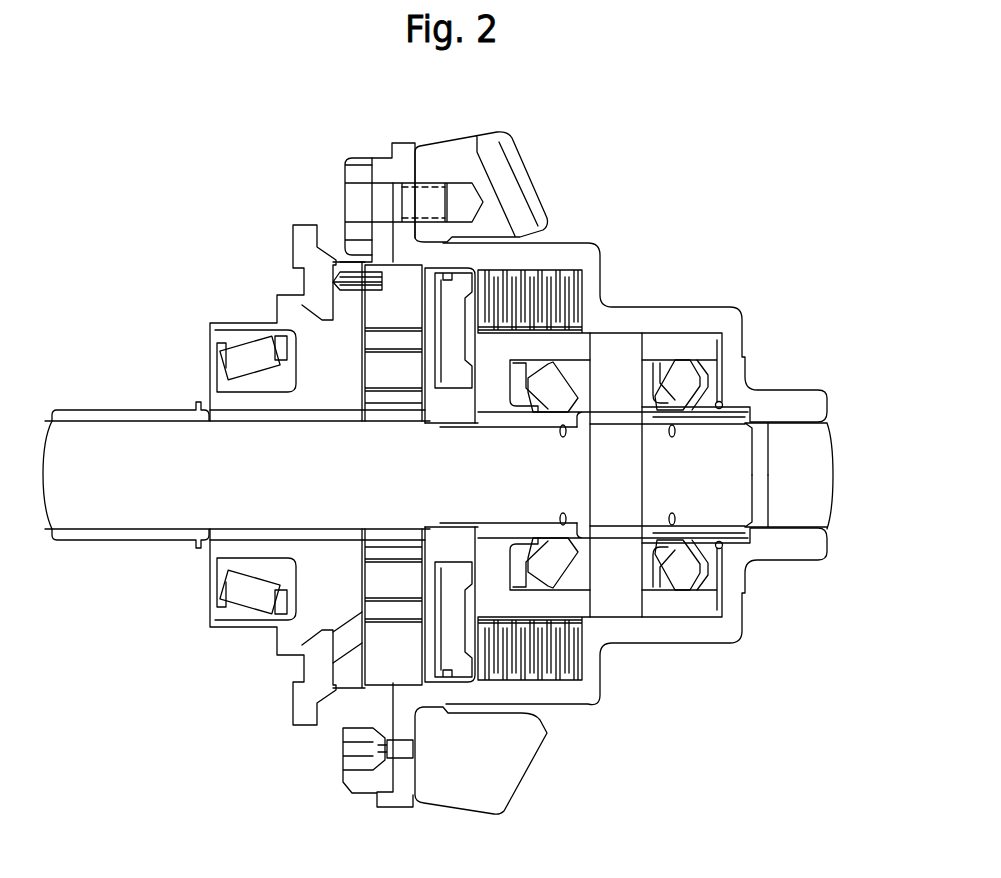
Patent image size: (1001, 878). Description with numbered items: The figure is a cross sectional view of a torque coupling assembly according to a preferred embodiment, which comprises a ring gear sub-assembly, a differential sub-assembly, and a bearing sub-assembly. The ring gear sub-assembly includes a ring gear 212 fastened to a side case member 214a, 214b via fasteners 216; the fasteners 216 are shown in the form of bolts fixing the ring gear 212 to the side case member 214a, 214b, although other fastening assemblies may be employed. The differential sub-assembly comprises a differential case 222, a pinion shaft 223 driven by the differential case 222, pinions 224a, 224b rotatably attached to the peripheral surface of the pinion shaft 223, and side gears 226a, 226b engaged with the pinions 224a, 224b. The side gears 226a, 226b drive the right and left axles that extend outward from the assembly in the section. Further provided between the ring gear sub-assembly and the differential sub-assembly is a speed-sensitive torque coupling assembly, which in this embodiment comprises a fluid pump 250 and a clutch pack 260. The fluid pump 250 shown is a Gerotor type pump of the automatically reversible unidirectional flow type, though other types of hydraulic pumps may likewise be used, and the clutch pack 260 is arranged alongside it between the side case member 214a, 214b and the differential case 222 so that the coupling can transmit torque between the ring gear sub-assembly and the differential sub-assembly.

The ring gear 212 is at (455, 148).
The fasteners 216 is at (362, 197).
The side case member 214a is at (328, 382).
The side case member 214b is at (592, 250).
The differential case 222 is at (700, 340).
The pinion shaft 223 is at (635, 400).
The pinion 224a is at (655, 367).
The pinion 224b is at (655, 582).
The side gear 226a is at (530, 410).
The side gear 226b is at (700, 410).
The fluid pump 250 is at (392, 626).
The clutch pack 260 is at (526, 673).